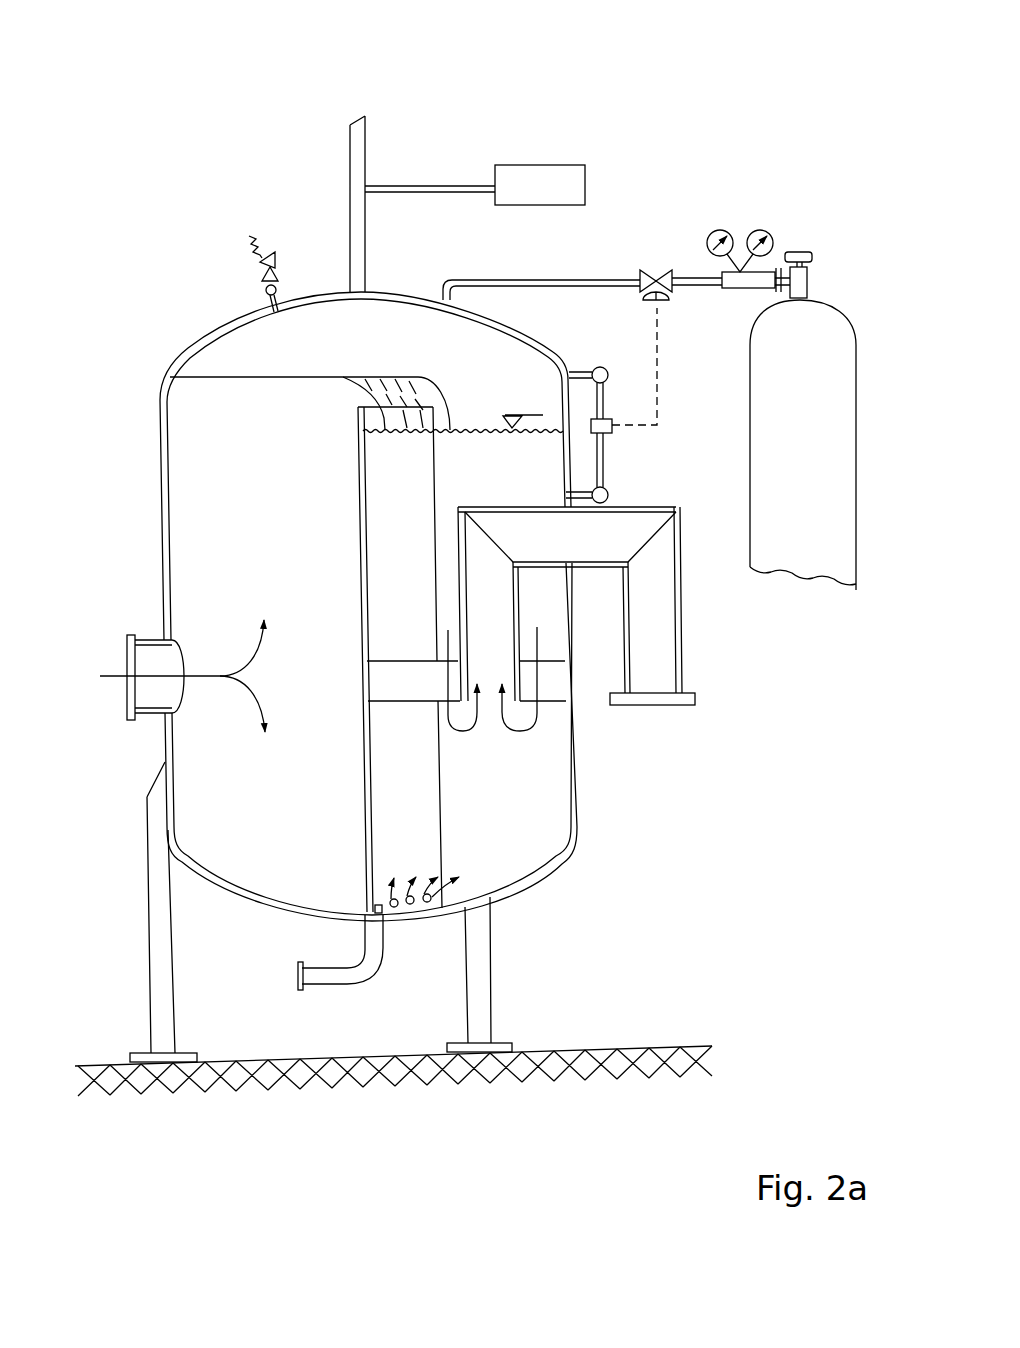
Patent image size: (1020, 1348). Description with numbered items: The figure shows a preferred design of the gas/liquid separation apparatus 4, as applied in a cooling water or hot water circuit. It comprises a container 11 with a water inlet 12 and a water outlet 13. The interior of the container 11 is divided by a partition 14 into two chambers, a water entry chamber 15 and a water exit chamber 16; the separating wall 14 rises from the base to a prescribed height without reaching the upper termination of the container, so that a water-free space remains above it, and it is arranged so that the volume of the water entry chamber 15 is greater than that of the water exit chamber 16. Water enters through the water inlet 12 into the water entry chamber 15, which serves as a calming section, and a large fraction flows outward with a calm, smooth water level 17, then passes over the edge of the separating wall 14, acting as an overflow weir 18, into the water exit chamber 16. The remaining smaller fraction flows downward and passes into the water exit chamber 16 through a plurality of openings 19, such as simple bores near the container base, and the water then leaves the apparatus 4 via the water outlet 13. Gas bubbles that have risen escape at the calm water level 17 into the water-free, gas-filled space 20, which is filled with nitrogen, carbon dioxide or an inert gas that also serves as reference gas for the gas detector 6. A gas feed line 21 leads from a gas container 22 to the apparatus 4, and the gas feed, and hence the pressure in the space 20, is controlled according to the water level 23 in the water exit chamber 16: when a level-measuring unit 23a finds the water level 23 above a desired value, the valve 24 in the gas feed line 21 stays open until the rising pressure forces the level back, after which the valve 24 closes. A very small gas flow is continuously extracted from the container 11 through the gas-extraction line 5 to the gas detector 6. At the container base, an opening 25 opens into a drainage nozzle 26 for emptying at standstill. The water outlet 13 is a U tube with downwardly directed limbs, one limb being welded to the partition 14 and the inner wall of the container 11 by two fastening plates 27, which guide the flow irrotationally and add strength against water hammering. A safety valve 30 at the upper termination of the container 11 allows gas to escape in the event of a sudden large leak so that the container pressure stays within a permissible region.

The gas/liquid separation apparatus 4 is at (138, 318).
The gas-extraction line 5 is at (443, 186).
The gas detector 6 is at (567, 185).
The container 11 is at (203, 330).
The water inlet 12 is at (130, 662).
The water outlet 13 is at (652, 622).
The partition 14 is at (364, 758).
The water entry chamber 15 is at (285, 530).
The water exit chamber 16 is at (521, 483).
The water level 17 is at (298, 376).
The overflow weir 18 is at (389, 376).
The openings 19 is at (440, 908).
The gas-filled space 20 is at (330, 353).
The gas feed line 21 is at (608, 278).
The gas container 22 is at (832, 357).
The water level 23 is at (469, 415).
The level-measuring unit 23a is at (614, 431).
The valve 24 is at (657, 270).
The opening 25 is at (383, 914).
The drainage nozzle 26 is at (325, 975).
The fastening plates 27 is at (400, 683).
The relief valve 30 is at (256, 233).